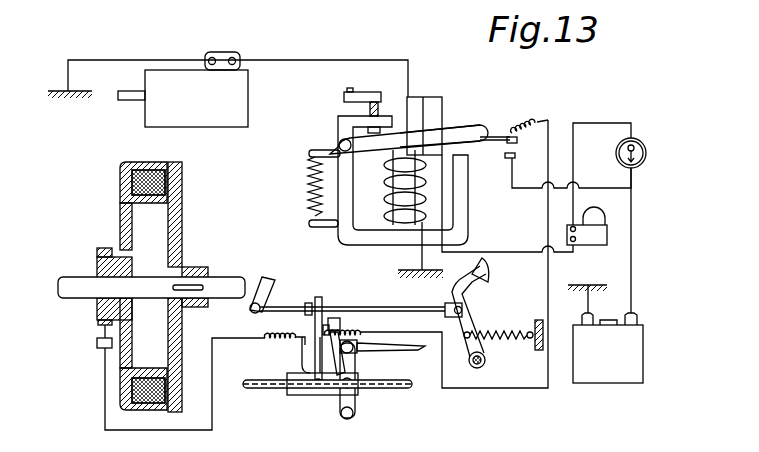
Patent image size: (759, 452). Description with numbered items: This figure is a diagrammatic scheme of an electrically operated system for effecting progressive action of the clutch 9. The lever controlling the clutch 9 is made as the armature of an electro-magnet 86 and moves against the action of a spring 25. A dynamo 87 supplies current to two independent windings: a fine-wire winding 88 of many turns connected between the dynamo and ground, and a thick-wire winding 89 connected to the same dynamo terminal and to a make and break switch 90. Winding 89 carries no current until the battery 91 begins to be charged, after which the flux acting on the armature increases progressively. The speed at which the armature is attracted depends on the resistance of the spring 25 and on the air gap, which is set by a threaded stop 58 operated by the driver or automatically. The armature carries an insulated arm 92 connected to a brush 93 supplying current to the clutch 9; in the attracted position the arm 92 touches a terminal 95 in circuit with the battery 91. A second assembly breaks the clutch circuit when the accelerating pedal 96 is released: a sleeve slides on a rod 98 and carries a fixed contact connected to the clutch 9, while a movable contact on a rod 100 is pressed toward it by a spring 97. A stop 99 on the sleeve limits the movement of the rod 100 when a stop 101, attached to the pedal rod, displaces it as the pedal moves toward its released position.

The electro-magnetic clutch 9 is at (155, 185).
The spring 25 is at (306, 180).
The threaded stop 58 is at (367, 111).
The electro-magnet 86 is at (352, 228).
The dynamo 87 is at (235, 88).
The winding 88 is at (432, 98).
The winding 89 is at (450, 126).
The make and break switch 90 is at (597, 233).
The battery 91 is at (615, 358).
The insulated arm 92 is at (512, 131).
The brush 93 is at (100, 326).
The terminal 95 is at (509, 159).
The accelerating pedal 96 is at (460, 288).
The spring 97 is at (340, 363).
The rod 98 is at (383, 386).
The stop 99 is at (341, 323).
The rod 100 is at (322, 308).
The stop 101 is at (307, 302).